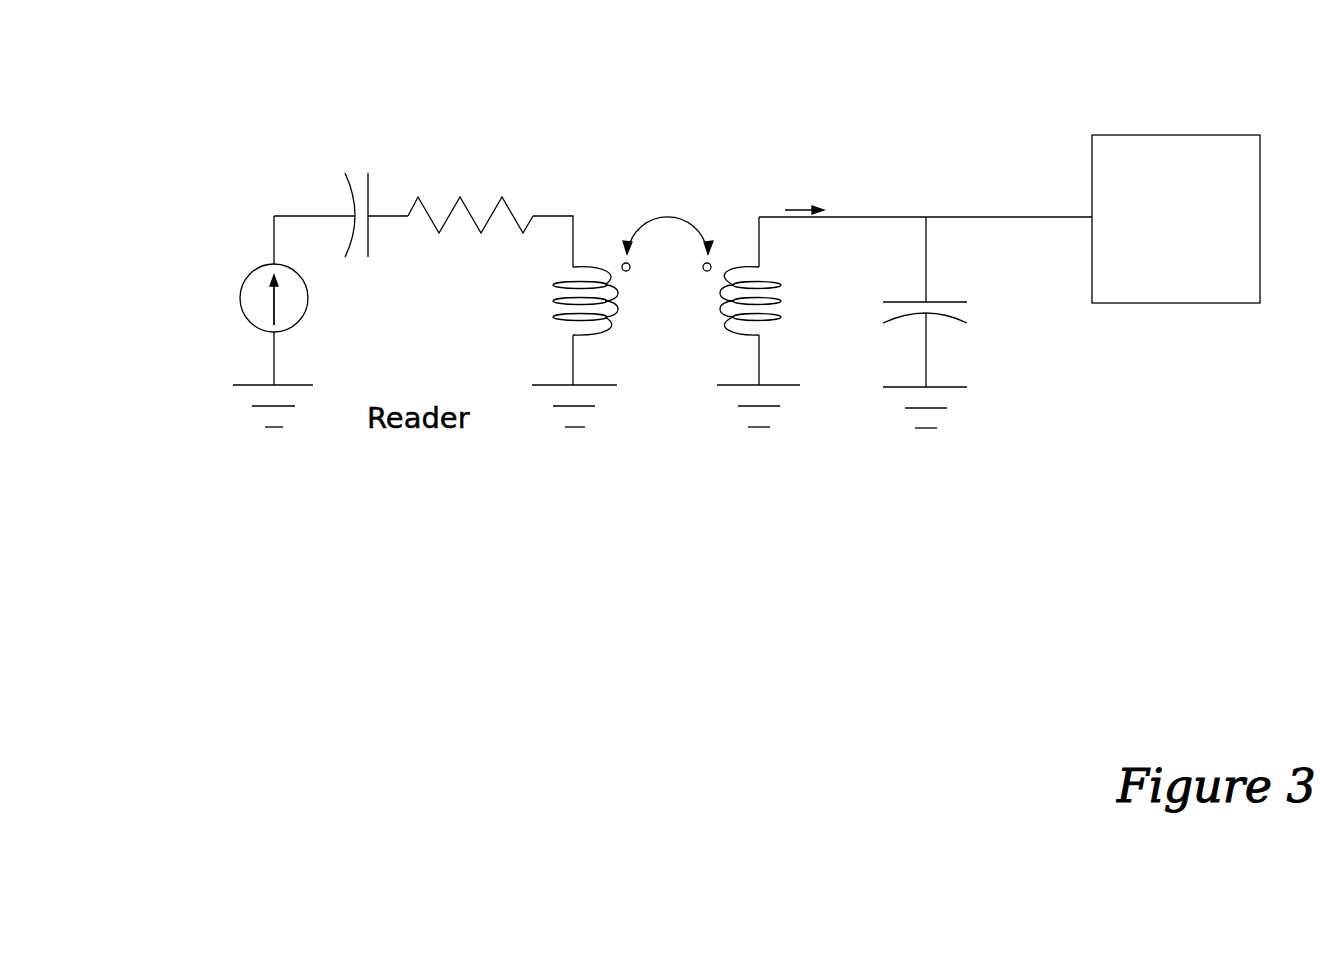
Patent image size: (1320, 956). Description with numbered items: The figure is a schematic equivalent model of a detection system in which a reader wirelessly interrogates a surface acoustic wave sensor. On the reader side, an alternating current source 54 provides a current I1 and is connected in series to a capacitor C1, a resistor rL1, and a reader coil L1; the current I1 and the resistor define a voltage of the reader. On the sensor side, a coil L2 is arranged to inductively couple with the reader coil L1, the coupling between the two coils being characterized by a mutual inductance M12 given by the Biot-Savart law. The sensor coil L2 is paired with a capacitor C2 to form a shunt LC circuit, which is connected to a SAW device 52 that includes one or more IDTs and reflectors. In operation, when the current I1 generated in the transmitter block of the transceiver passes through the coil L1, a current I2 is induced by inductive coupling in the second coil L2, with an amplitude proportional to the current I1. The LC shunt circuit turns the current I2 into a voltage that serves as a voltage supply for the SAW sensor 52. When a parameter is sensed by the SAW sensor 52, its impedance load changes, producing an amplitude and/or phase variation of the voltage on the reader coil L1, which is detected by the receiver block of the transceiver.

The SAW device 52 is at (1175, 135).
The alternating current source 54 is at (250, 327).
The capacitor C1 is at (355, 194).
The resistor rL1 is at (470, 197).
The coil L1 is at (575, 299).
The mutual inductance M12 is at (668, 210).
The coil L2 is at (759, 299).
The capacitor C2 is at (945, 320).
The current I1 is at (246, 299).
The current I2 is at (804, 190).